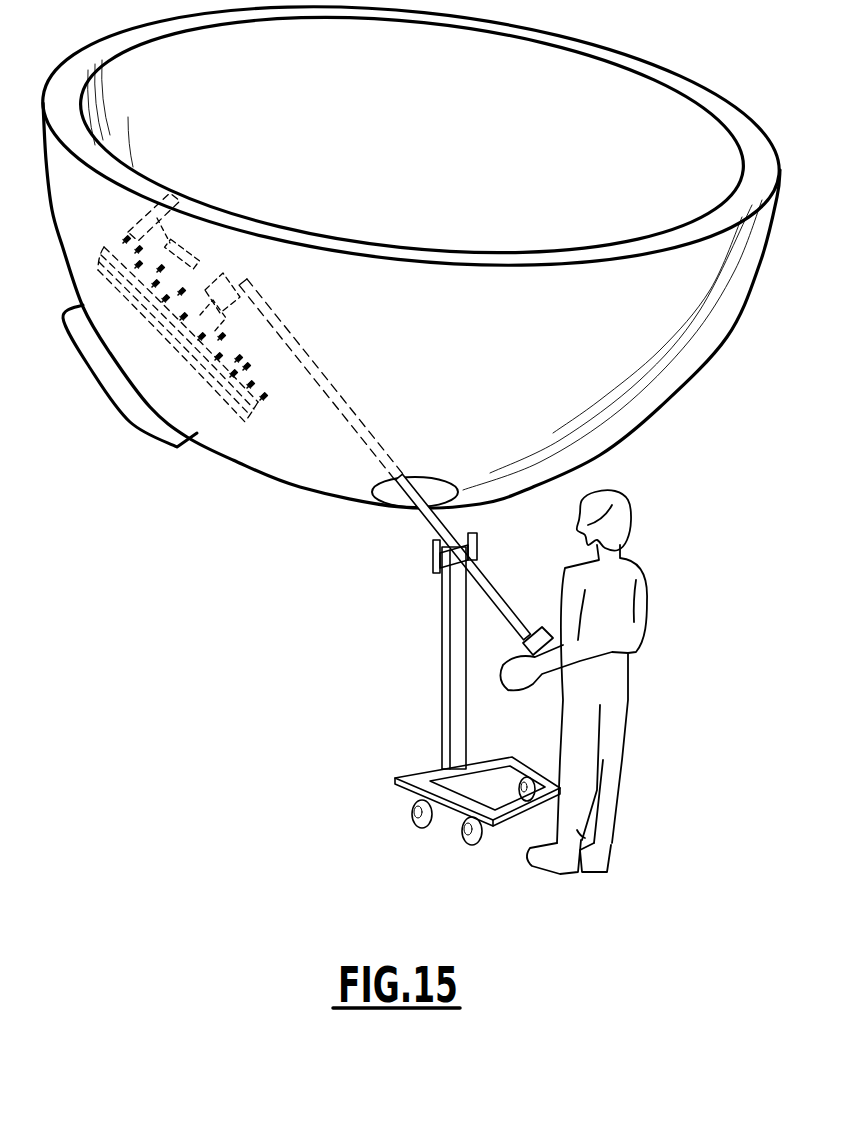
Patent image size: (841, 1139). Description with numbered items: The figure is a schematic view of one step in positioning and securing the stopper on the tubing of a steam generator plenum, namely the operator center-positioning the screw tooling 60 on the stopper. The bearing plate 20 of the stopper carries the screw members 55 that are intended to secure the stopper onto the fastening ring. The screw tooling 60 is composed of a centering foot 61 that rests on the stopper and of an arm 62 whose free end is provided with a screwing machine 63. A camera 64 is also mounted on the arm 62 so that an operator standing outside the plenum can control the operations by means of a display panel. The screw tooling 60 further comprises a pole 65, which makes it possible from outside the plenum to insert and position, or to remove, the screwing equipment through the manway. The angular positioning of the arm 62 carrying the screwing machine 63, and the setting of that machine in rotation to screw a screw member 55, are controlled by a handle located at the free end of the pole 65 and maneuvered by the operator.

The bearing plate 20 is at (262, 407).
The screw members 55 is at (258, 372).
The screw tooling 60 is at (319, 423).
The centering foot 61 is at (213, 317).
The arm 62 is at (212, 272).
The screwing machine 63 is at (143, 214).
The camera 64 is at (195, 257).
The pole 65 is at (326, 380).